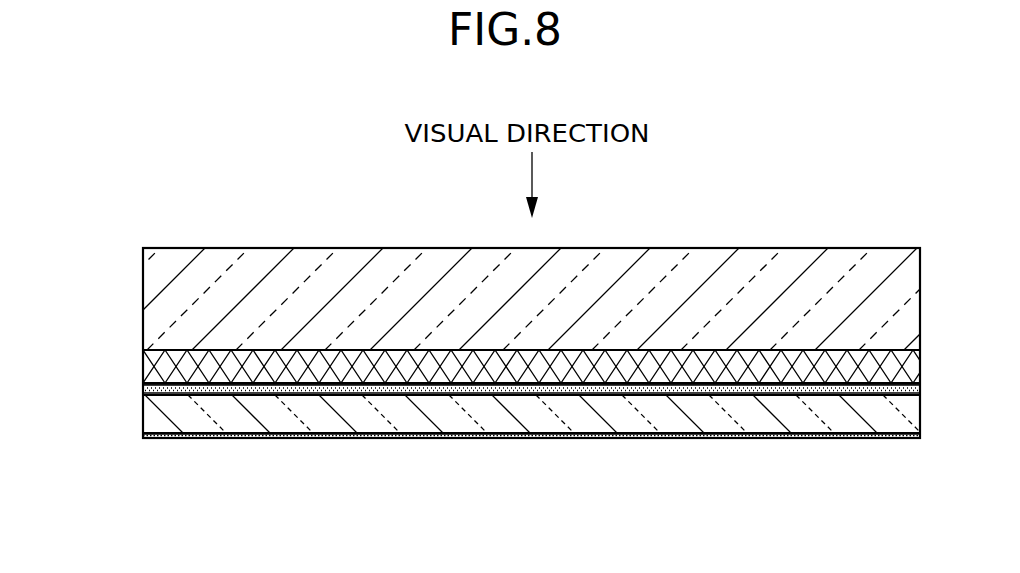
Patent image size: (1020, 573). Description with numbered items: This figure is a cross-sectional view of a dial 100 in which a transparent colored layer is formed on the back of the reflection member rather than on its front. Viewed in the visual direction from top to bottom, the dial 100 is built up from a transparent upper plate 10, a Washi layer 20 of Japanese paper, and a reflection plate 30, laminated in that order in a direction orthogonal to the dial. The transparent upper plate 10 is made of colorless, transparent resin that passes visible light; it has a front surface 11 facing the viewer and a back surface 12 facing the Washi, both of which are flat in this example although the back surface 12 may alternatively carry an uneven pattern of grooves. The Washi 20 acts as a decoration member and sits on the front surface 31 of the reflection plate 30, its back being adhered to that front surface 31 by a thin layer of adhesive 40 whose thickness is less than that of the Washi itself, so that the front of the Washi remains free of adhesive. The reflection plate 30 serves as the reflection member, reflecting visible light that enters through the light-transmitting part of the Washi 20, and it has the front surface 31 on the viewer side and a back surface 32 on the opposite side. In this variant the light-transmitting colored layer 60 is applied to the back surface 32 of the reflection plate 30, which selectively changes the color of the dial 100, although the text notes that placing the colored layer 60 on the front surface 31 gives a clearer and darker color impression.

The dial 100 is at (909, 240).
The transparent upper plate 10 is at (143, 296).
The front surface 11 is at (190, 248).
The back surface 12 is at (284, 356).
The Washi layer 20 is at (143, 370).
The adhesive 40 is at (143, 387).
The reflection plate 30 is at (143, 413).
The front surface 31 is at (334, 392).
The back surface 32 is at (457, 433).
The colored layer 60 is at (143, 433).